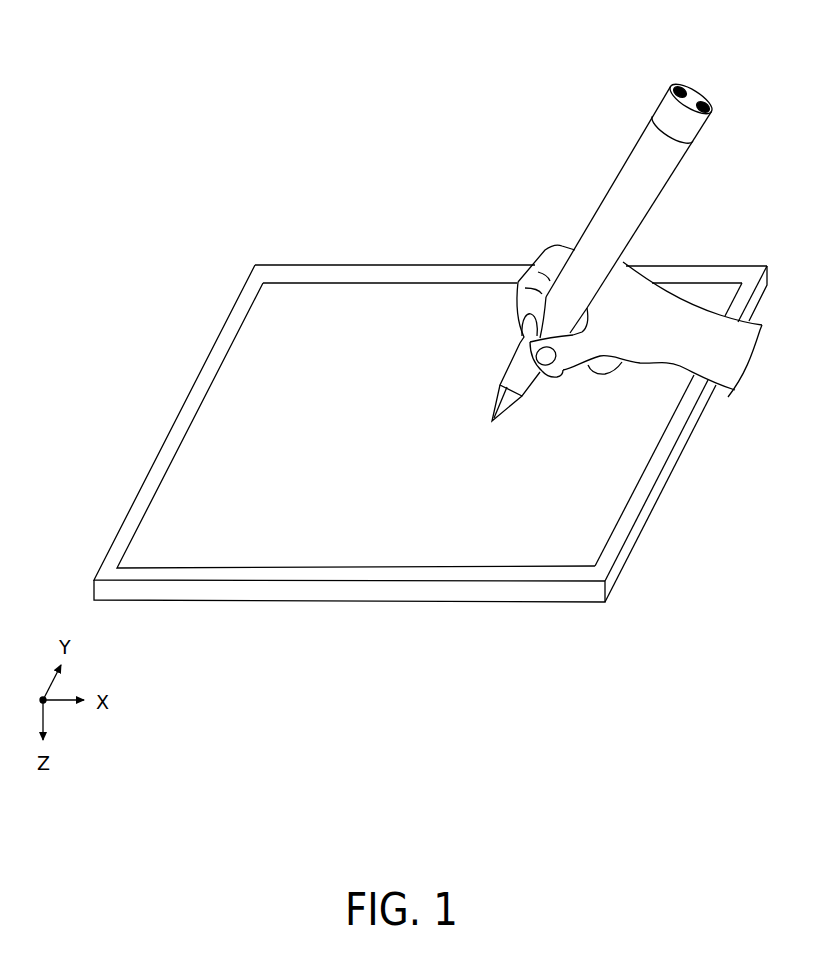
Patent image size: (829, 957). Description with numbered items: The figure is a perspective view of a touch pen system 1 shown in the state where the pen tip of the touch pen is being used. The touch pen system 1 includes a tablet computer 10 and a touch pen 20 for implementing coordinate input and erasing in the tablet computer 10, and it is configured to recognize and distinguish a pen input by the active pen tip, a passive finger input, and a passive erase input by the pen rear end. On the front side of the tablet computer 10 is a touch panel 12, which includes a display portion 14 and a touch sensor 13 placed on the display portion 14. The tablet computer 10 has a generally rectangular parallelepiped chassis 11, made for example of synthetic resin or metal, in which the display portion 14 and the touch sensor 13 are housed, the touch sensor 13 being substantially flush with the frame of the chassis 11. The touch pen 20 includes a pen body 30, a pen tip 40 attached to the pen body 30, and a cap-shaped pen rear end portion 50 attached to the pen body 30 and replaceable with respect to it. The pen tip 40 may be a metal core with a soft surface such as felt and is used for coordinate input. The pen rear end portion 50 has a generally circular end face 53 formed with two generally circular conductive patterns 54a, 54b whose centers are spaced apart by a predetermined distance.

The touch pen system 1 is at (242, 195).
The tablet computer 10 is at (314, 247).
The chassis 11 is at (220, 358).
The touch panel 12 is at (215, 437).
The touch sensor 13 is at (429, 425).
The display portion 14 is at (429, 425).
The touch pen 20 is at (604, 170).
The pen body 30 is at (590, 220).
The pen tip 40 is at (495, 402).
The pen rear end portion 50 is at (690, 125).
The end face 53 is at (695, 83).
The conductive pattern 54a is at (678, 84).
The conductive pattern 54b is at (710, 99).